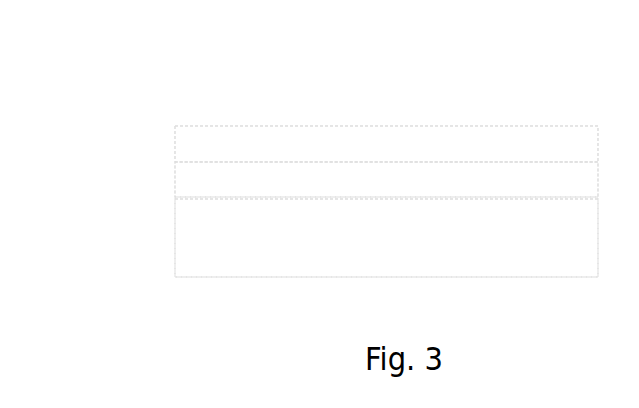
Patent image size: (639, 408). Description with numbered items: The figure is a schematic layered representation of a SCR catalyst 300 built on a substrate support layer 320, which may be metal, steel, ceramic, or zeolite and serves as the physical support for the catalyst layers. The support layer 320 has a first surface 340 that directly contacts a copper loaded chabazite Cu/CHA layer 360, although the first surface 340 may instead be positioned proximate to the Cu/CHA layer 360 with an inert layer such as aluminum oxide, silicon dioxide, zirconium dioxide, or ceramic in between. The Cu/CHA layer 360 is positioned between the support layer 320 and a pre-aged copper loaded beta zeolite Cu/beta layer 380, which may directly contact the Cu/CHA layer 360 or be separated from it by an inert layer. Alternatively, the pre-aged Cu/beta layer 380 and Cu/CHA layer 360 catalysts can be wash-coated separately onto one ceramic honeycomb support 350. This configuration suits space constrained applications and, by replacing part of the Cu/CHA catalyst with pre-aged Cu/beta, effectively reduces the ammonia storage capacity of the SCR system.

The SCR catalyst 300 is at (212, 87).
The substrate support layer 320 is at (175, 241).
The first surface 340 is at (530, 195).
The ceramic honeycomb support 350 is at (266, 179).
The Cu/CHA layer 360 is at (199, 180).
The pre-aged Cu/beta layer 380 is at (530, 138).